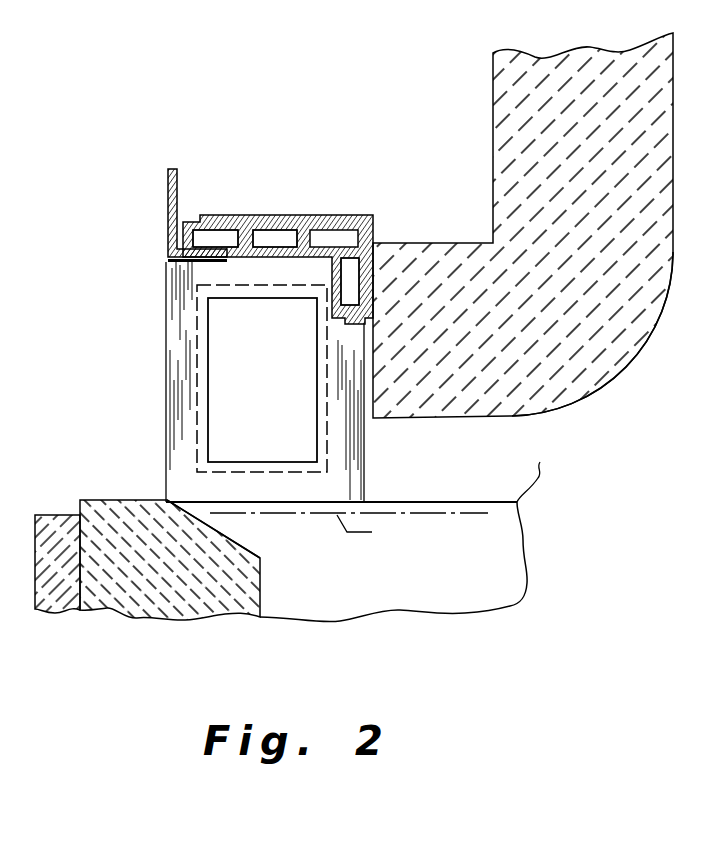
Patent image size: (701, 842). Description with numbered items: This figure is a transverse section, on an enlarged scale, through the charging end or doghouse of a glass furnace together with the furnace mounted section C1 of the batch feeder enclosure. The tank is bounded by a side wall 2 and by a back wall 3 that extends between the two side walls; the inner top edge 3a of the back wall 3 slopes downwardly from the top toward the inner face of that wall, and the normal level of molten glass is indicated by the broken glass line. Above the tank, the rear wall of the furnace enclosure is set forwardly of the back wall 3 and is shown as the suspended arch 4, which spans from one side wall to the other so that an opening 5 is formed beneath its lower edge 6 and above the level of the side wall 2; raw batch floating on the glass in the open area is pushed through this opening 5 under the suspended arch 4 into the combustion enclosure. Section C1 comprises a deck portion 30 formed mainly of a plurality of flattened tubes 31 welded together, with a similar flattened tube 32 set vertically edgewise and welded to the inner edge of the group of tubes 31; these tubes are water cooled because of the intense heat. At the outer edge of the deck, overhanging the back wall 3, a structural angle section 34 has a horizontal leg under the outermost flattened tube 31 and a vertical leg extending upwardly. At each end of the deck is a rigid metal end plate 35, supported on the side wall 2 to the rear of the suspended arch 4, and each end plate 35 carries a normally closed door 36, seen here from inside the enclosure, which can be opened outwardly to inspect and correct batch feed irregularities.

The side wall 2 is at (468, 583).
The back wall 3 is at (262, 586).
The inner top edge 3a is at (240, 547).
The suspended arch 4 is at (492, 126).
The opening 5 is at (430, 466).
The lower edge 6 is at (550, 410).
The deck portion 30 is at (218, 217).
The flattened tubes 31 is at (273, 238).
The flattened tube 32 is at (350, 275).
The structural angle section 34 is at (178, 171).
The end plate 35 is at (192, 415).
The door 36 is at (262, 378).
The enclosure section C1 is at (159, 264).